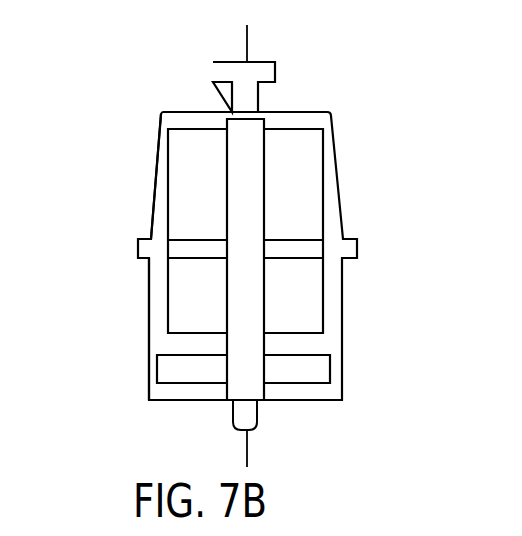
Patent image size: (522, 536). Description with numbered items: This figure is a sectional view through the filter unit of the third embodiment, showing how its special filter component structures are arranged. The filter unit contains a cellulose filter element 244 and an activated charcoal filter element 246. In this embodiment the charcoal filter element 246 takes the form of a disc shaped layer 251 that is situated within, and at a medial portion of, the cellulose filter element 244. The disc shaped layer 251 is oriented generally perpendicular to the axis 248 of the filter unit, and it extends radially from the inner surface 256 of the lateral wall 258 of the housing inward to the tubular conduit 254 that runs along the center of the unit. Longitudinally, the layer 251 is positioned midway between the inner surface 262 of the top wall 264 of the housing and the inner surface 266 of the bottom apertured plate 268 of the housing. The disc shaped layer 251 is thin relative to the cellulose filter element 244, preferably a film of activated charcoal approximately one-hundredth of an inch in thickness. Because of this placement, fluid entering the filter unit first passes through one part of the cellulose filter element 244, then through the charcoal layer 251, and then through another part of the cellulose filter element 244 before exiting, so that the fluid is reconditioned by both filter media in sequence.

The cellulose filter element 244 is at (288, 170).
The activated charcoal filter element 246 is at (302, 235).
The axis 248 is at (248, 43).
The disc shaped layer 251 is at (280, 257).
The tubular conduit 254 is at (265, 347).
The inner surface of the lateral wall 256 is at (152, 266).
The lateral wall 258 is at (160, 178).
The inner surface of the top wall 262 is at (208, 113).
The top wall 264 is at (188, 110).
The inner surface of the bottom apertured plate 266 is at (193, 351).
The bottom apertured plate 268 is at (190, 368).